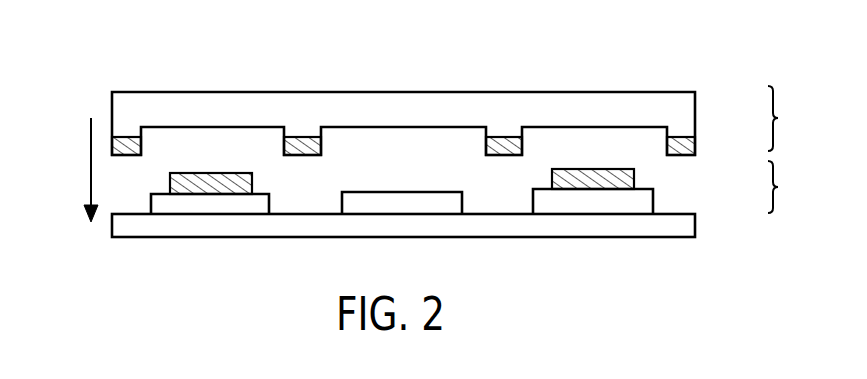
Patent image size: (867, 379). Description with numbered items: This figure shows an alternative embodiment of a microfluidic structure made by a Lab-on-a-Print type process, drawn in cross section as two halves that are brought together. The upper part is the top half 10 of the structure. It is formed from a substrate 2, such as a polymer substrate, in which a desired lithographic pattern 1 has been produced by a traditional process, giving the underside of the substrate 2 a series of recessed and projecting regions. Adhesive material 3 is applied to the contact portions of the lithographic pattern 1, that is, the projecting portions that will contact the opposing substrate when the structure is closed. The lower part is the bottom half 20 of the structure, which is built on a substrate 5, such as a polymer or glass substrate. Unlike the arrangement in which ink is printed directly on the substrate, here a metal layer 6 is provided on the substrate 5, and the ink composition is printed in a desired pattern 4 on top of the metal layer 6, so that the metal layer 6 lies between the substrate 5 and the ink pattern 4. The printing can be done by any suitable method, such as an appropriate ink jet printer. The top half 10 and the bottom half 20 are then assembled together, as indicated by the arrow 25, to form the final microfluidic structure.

The lithographic pattern 1 is at (128, 140).
The substrate 2 is at (450, 91).
The adhesive material 3 is at (683, 142).
The ink pattern 4 is at (237, 188).
The substrate 5 is at (695, 221).
The metal layer 6 is at (255, 205).
The top half 10 is at (786, 118).
The bottom half 20 is at (786, 187).
The arrow 25 is at (91, 163).